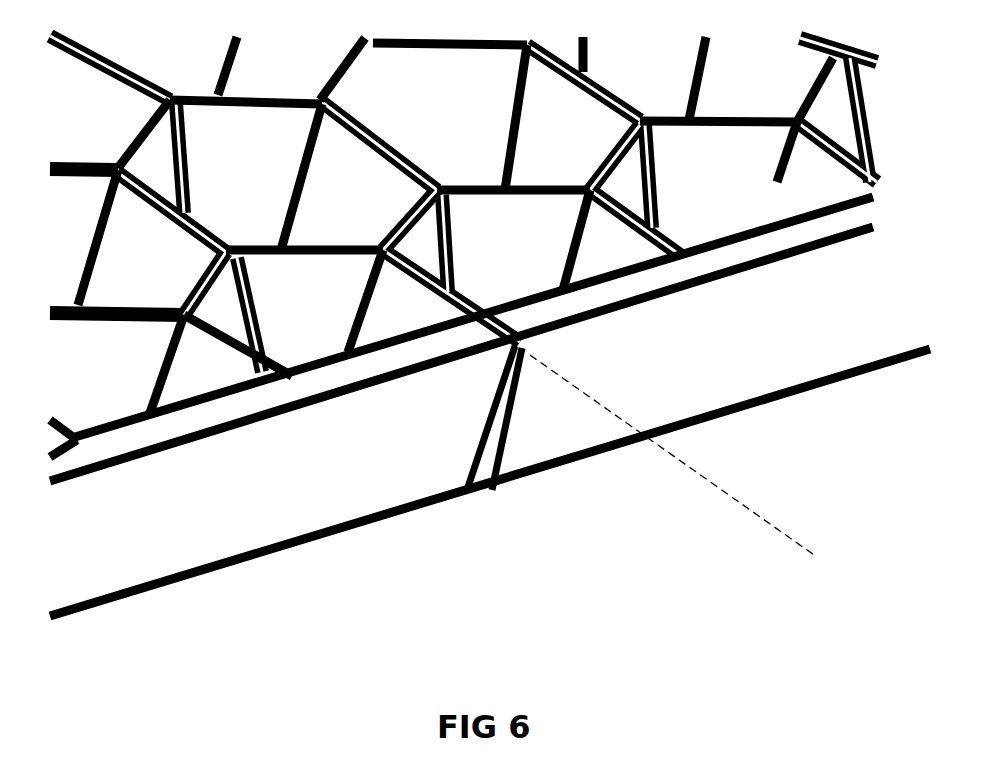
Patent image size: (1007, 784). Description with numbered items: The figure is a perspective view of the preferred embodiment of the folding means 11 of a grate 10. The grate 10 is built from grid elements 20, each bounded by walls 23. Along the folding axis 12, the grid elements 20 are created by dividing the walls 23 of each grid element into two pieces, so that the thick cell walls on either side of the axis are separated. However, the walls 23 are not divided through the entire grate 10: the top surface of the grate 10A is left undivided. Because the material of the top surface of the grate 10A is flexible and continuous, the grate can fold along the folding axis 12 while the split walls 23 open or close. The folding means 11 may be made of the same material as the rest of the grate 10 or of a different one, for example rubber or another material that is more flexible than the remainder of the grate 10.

The grate 10 is at (548, 445).
The top surface of the grate 10A is at (233, 405).
The folding means 11 is at (184, 213).
The folding axis 12 is at (747, 510).
The grid elements 20 is at (715, 195).
The walls 23 is at (258, 198).